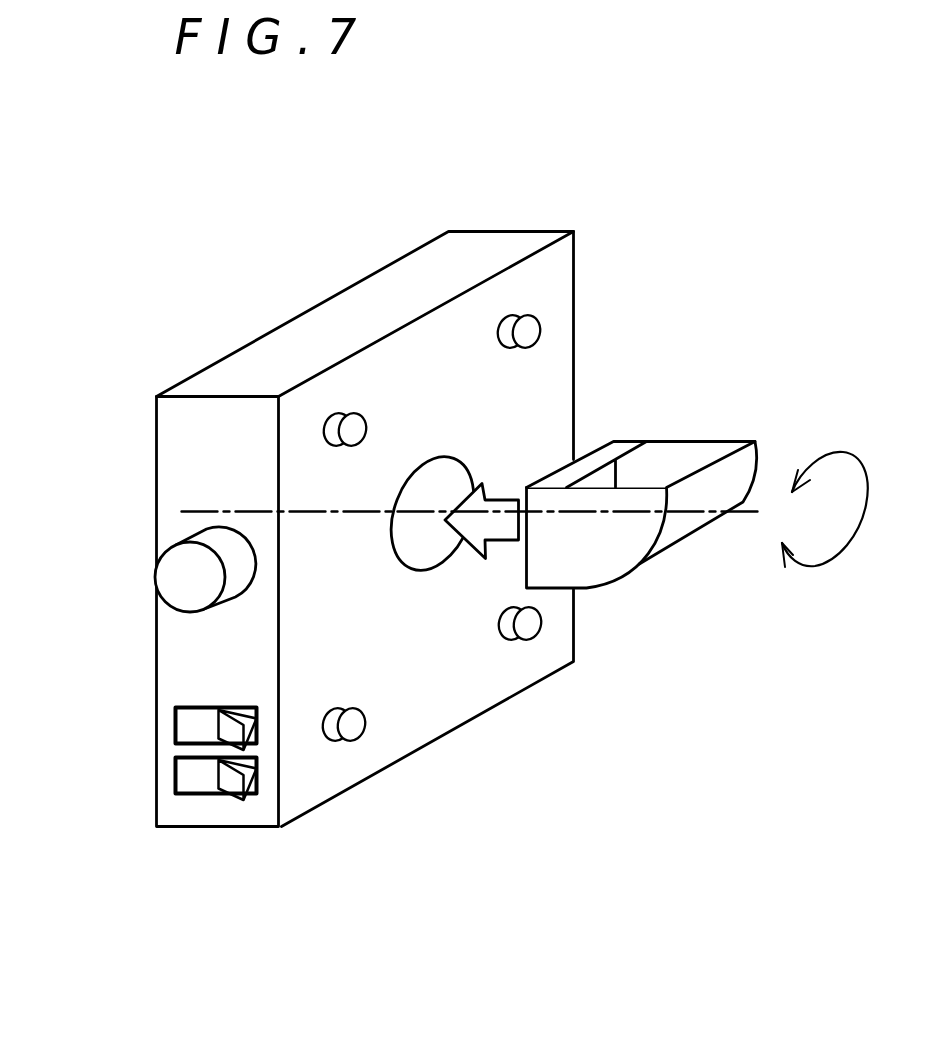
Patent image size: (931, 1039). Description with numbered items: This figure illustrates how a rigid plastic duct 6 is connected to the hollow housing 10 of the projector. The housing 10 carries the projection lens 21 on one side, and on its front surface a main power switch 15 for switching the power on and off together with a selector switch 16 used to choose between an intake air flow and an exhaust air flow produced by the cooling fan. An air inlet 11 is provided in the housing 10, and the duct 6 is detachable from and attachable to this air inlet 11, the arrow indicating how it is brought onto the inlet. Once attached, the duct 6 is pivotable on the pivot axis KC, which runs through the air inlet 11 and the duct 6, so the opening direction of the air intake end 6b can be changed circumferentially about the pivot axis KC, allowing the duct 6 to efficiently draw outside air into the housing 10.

The housing 10 is at (527, 230).
The projection lens 21 is at (155, 583).
The selector switch 16 is at (174, 726).
The main power switch 15 is at (200, 794).
The air inlet 11 is at (414, 567).
The duct 6 is at (655, 603).
The air intake end 6b is at (713, 422).
The pivot axis KC is at (740, 510).